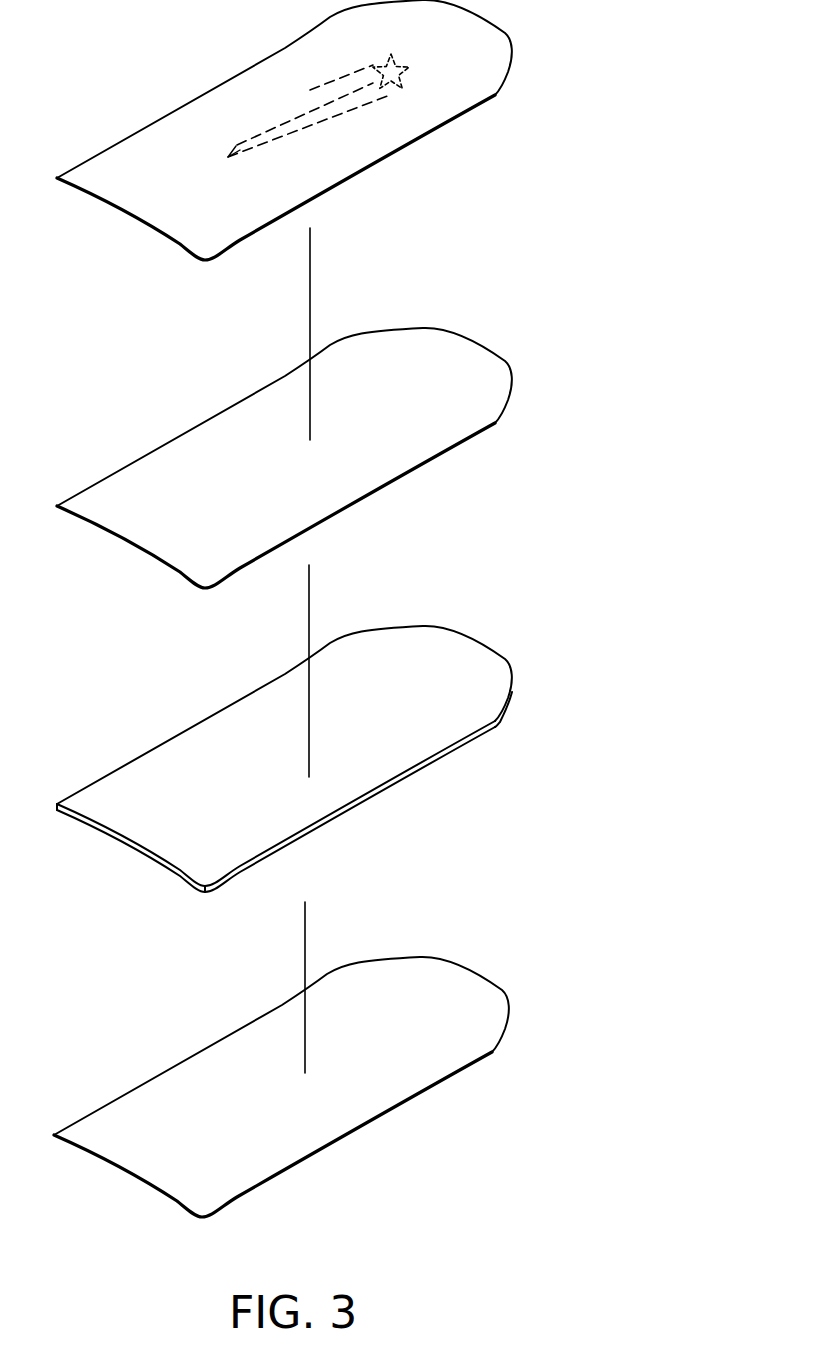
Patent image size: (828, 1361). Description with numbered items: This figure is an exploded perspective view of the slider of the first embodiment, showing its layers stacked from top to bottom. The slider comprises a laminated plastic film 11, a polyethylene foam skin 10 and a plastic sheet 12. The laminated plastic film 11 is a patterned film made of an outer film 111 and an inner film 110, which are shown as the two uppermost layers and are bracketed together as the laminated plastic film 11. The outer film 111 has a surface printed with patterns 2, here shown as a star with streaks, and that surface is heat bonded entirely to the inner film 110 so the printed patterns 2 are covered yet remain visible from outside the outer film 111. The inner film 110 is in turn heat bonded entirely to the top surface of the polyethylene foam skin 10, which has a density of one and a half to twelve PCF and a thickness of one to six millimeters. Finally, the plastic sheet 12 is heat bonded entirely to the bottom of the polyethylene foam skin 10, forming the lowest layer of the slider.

The patterns 2 is at (317, 88).
The laminated plastic film 11 is at (390, 294).
The outer film 111 is at (349, 130).
The inner film 110 is at (349, 422).
The polyethylene foam skin 10 is at (440, 668).
The plastic sheet 12 is at (428, 990).